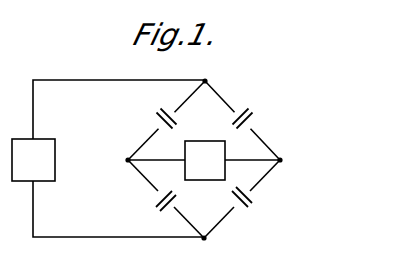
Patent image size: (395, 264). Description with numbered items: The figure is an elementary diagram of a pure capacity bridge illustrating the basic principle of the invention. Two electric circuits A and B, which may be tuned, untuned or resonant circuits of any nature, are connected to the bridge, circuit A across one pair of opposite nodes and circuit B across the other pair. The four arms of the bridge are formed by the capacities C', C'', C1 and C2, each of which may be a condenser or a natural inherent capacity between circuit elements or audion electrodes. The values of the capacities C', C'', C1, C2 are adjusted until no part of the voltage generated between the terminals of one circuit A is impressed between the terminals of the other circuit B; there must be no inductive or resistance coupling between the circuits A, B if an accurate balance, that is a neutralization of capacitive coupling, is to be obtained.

The electric circuit A is at (33, 160).
The electric circuit B is at (205, 160).
The capacity C' is at (157, 115).
The capacity C'' is at (259, 114).
The capacity C1 is at (155, 206).
The capacity C2 is at (257, 203).